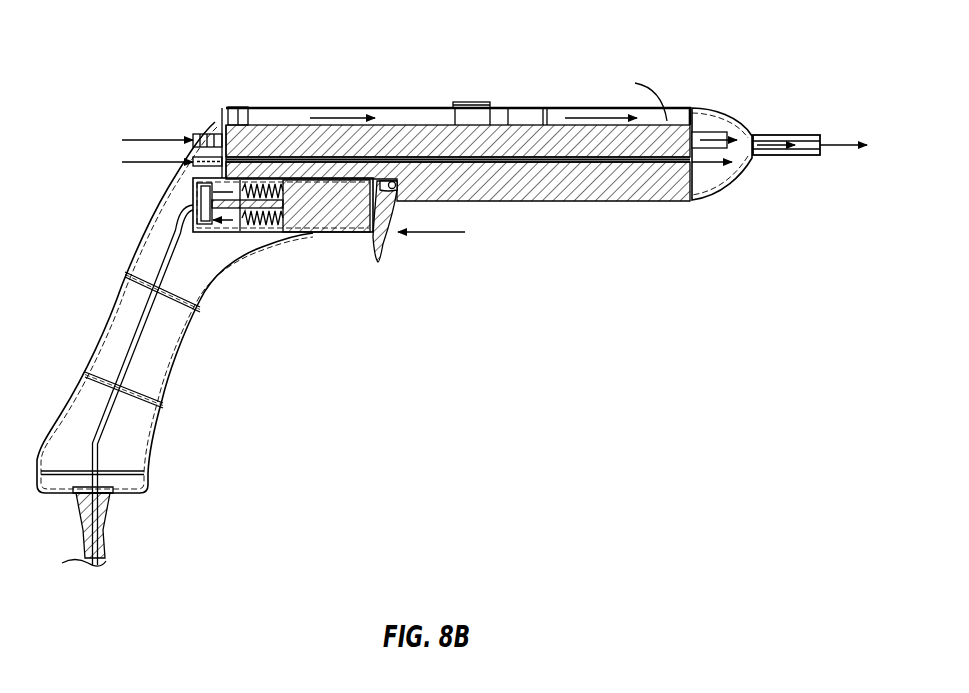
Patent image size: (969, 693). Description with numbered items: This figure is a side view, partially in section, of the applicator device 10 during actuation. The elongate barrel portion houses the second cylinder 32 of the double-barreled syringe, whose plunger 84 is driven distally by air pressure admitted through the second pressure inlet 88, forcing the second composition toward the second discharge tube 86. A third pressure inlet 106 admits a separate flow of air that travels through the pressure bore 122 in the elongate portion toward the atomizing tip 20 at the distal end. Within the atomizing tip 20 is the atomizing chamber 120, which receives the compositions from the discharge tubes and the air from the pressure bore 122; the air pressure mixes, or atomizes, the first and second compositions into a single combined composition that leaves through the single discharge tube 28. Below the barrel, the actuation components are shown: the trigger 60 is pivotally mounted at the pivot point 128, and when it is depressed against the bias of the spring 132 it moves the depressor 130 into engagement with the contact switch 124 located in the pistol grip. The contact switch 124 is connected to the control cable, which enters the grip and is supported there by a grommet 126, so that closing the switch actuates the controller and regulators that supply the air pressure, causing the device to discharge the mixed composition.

The applicator device 10 is at (512, 407).
The atomizing tip 20 is at (720, 185).
The discharge tube 28 is at (783, 135).
The second cylinder 32 is at (375, 113).
The trigger 60 is at (386, 242).
The plunger 84 is at (525, 121).
The second discharge tube 86 is at (716, 132).
The second pressure inlet 88 is at (206, 130).
The third pressure inlet 106 is at (194, 163).
The atomizing chamber 120 is at (742, 163).
The pressure bore 122 is at (577, 163).
The contact switch 124 is at (197, 201).
The grommet 126 is at (104, 515).
The pivot point 128 is at (396, 189).
The depressor 130 is at (333, 224).
The spring 132 is at (253, 222).